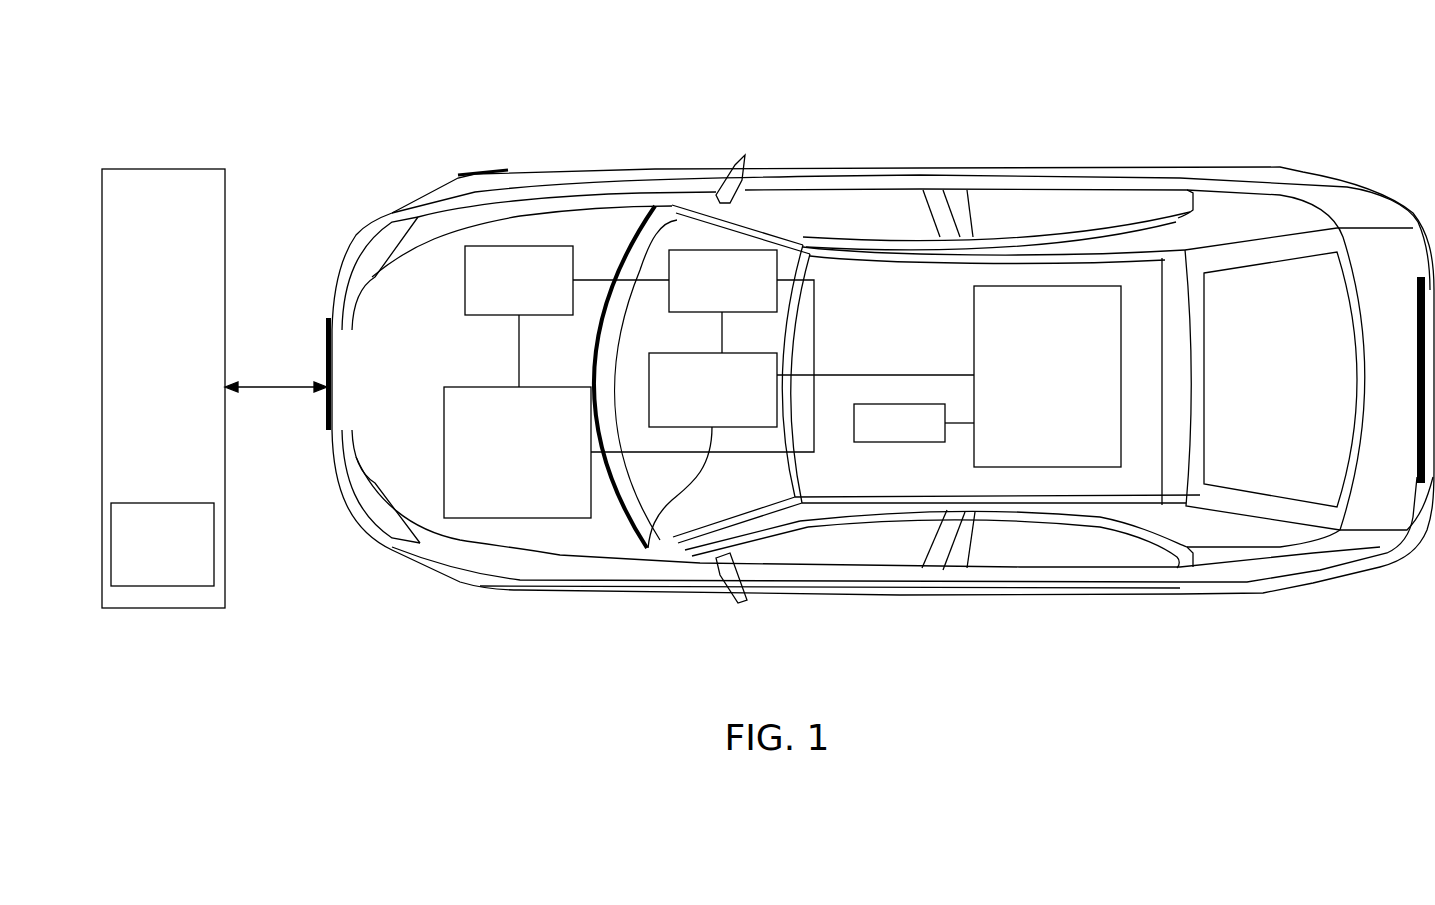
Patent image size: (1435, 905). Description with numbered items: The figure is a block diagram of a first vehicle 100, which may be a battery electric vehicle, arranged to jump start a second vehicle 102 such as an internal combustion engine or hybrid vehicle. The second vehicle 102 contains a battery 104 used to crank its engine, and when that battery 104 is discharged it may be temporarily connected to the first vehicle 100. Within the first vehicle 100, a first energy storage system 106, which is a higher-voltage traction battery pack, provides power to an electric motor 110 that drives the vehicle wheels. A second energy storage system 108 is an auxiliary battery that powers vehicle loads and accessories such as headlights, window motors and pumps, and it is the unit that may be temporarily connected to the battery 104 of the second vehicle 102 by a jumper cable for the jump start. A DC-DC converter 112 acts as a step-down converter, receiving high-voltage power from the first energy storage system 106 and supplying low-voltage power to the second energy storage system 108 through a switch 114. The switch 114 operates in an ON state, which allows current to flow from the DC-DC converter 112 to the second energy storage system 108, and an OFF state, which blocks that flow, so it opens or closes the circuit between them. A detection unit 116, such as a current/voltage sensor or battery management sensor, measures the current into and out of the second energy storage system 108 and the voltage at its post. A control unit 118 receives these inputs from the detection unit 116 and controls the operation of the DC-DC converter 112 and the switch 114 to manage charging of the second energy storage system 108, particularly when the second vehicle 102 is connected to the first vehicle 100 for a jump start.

The first vehicle 100 is at (825, 168).
The second vehicle 102 is at (160, 169).
The battery 104 is at (160, 586).
The first energy storage system 106 is at (1042, 286).
The second energy storage system 108 is at (516, 518).
The electric motor 110 is at (898, 442).
The DC-DC converter 112 is at (648, 555).
The switch 114 is at (465, 277).
The detection unit 116 is at (523, 313).
The control unit 118 is at (703, 250).